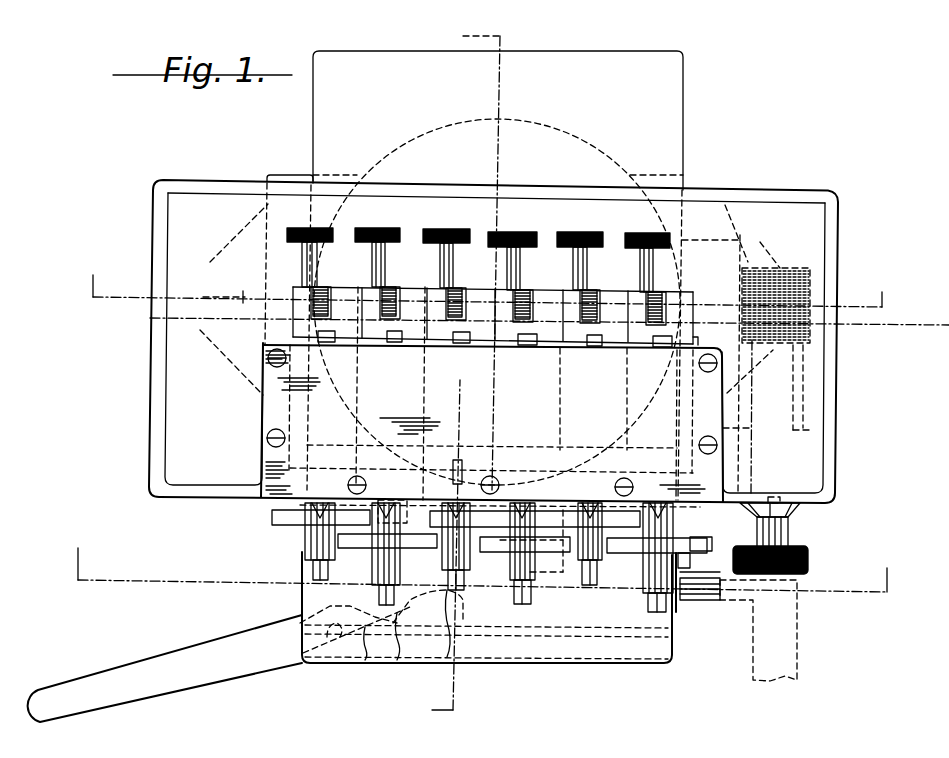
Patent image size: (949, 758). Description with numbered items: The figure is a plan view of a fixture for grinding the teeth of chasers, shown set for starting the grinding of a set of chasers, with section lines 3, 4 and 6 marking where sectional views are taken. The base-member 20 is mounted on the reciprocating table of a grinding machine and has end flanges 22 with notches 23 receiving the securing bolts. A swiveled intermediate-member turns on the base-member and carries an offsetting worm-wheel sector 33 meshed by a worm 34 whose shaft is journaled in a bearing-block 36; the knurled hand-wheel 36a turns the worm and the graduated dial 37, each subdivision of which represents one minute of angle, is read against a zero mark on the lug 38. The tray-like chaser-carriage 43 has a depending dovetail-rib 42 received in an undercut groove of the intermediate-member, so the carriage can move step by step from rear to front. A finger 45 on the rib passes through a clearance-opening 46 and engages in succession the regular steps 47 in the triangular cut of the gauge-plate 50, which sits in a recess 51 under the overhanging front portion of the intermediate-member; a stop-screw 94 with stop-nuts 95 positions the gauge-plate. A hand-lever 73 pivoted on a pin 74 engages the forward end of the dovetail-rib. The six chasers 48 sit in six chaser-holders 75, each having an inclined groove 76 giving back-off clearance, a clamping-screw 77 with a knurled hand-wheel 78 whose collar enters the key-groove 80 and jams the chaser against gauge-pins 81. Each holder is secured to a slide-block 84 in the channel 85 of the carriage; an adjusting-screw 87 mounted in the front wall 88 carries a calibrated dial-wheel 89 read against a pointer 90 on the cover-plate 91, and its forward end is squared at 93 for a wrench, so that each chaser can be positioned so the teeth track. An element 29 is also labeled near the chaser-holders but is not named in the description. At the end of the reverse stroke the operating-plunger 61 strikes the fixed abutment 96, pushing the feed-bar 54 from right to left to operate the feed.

The section line 3- 3 is at (481, 560).
The section line 4- 4 is at (519, 290).
The section line 6- 6 is at (457, 376).
The base-member 20 is at (294, 178).
The flanges 22 is at (228, 244).
The notches 23 is at (215, 288).
The threaded nut 29 is at (521, 290).
The worm-wheel sector 33 is at (748, 261).
The worm 34 is at (811, 278).
The bearing-block 36 is at (808, 412).
The knurled hand-wheel 36a is at (809, 562).
The graduated dial 37 is at (792, 512).
The lug 38 is at (790, 502).
The dovetail-rib 42 is at (466, 622).
The chaser-carriage 43 is at (151, 421).
The finger 45 is at (456, 480).
The clearance-opening 46 is at (478, 575).
The steps 47 is at (560, 573).
The chasers 48 is at (447, 297).
The gauge-plate 50 is at (399, 660).
The recess 51 is at (366, 660).
The feed-bar 54 is at (683, 612).
The operating-plunger 61 is at (707, 600).
The hand-lever 73 is at (190, 653).
The pin 74 is at (338, 647).
The chaser-holders 75 is at (345, 291).
The inclined groove 76 is at (596, 297).
The clamping-screw 77 is at (451, 258).
The knurled hand-wheel 78 is at (386, 229).
The key-groove 80 is at (648, 311).
The gauge-pins 81 is at (389, 316).
The slide-blocks 84 is at (345, 343).
The channel 85 is at (288, 458).
The adjusting-screw 87 is at (383, 588).
The front wall 88 is at (366, 470).
The calibrated dial-wheel 89 is at (284, 526).
The pointer 90 is at (342, 505).
The cover-plate 91 is at (275, 410).
The squared end 93 is at (378, 596).
The stop-screw 94 is at (690, 557).
The stop-nuts 95 is at (689, 565).
The abutment 96 is at (790, 643).